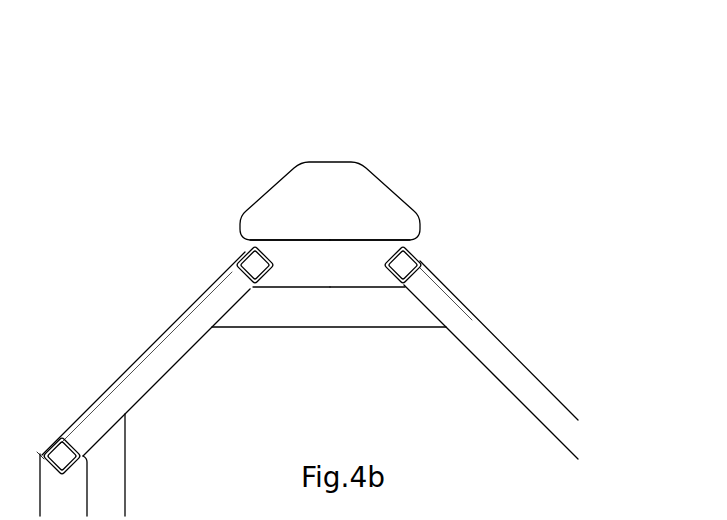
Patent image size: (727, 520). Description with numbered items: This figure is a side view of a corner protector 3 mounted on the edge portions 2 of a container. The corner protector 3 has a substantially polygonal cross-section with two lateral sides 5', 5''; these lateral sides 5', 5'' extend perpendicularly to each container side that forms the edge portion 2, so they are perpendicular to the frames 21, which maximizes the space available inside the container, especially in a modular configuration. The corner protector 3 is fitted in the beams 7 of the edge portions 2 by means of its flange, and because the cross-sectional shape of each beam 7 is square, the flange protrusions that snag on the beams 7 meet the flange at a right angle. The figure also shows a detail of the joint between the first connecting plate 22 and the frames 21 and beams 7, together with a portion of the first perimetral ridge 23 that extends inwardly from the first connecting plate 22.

The edge portion 2 is at (212, 98).
The corner protector 3 is at (393, 160).
The lateral side 5' is at (438, 249).
The lateral side 5'' is at (223, 237).
The beam 7 is at (252, 267).
The frame 21 is at (170, 348).
The first connecting plate 22 is at (218, 280).
The first perimetral ridge 23 is at (325, 313).